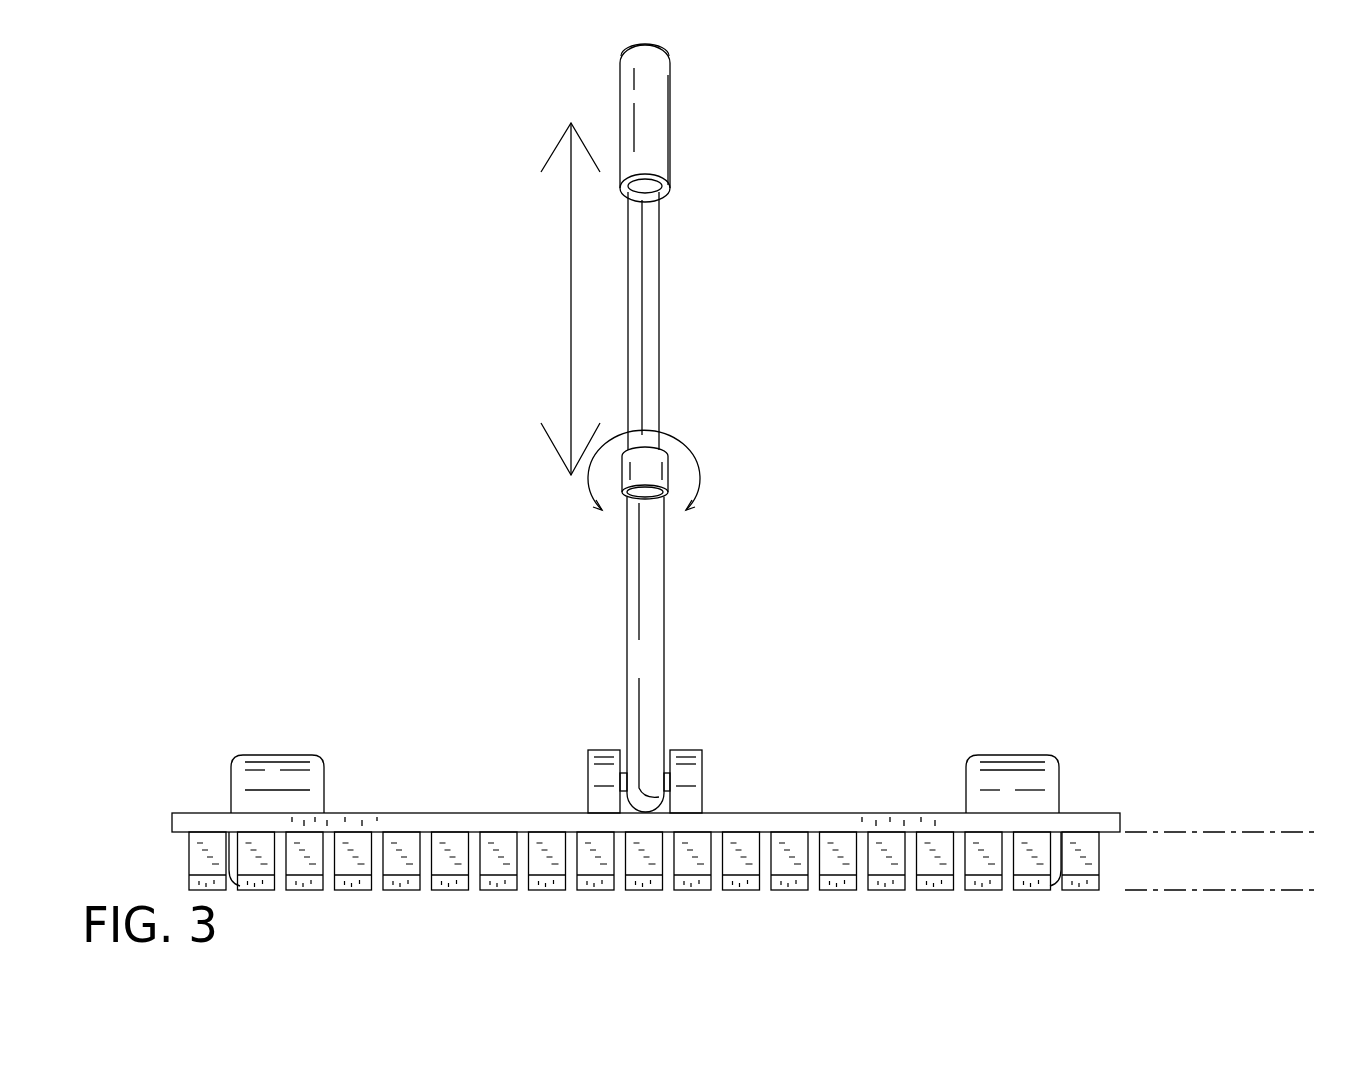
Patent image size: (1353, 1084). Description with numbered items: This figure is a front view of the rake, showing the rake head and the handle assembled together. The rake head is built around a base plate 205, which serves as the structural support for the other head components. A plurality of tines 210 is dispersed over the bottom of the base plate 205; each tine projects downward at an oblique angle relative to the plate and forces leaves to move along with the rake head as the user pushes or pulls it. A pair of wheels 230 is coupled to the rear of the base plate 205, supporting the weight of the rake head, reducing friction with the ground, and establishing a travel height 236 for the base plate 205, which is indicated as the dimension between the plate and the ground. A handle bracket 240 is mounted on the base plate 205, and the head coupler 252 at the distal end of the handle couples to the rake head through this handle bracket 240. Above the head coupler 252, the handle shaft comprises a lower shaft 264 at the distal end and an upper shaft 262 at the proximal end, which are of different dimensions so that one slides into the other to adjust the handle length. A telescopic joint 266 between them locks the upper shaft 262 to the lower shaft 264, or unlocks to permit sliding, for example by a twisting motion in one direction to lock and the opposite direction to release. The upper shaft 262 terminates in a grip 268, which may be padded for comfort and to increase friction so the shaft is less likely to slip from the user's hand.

The base plate 205 is at (820, 813).
The plurality of tines 210 is at (695, 891).
The pair of wheels 230 is at (275, 765).
The travel height 236 is at (1223, 950).
The handle bracket 240 is at (684, 773).
The head coupler 252 is at (624, 783).
The upper shaft 262 is at (648, 273).
The lower shaft 264 is at (651, 553).
The telescopic joint 266 is at (660, 470).
The grip 268 is at (658, 98).